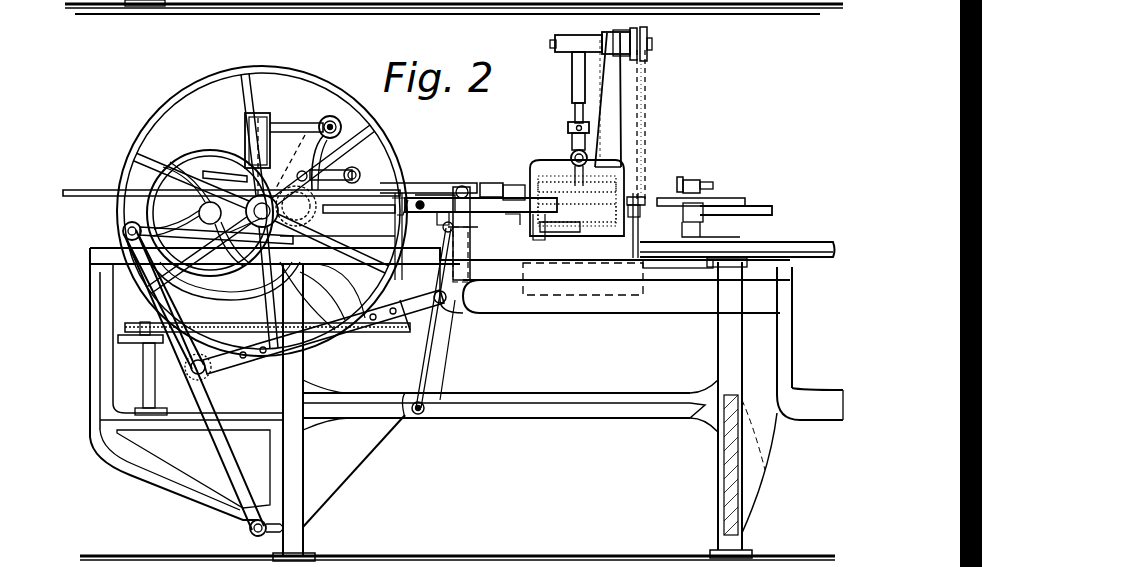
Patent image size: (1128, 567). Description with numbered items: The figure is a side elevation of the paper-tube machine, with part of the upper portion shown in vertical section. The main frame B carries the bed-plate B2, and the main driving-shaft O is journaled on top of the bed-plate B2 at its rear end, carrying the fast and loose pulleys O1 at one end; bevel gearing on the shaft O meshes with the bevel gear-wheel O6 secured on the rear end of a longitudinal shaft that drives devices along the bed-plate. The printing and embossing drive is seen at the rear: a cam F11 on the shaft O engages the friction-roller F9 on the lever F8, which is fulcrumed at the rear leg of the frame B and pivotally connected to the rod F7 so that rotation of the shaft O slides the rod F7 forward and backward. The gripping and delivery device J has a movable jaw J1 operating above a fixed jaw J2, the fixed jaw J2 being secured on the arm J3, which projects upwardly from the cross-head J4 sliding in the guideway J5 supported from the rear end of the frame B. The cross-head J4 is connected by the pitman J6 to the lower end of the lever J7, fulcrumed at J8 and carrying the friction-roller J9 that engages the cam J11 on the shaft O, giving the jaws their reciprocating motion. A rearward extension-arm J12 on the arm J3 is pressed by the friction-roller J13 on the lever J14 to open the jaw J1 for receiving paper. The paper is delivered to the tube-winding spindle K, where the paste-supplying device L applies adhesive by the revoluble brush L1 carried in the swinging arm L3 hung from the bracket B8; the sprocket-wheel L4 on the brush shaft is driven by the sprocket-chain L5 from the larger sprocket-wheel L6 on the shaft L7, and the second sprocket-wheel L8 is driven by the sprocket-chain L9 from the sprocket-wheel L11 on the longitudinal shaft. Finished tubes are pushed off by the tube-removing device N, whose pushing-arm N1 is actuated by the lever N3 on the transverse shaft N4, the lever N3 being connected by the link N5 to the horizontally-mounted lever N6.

The main frame B is at (466, 404).
The bed-plate B2 is at (822, 252).
The bracket B8 is at (610, 100).
The gripping and delivery device J is at (530, 180).
The movable jaw J1 is at (512, 178).
The fixed jaw J2 is at (540, 218).
The arm J3 is at (352, 172).
The cross-head J4 is at (470, 285).
The guideway J5 is at (575, 313).
The pitman J6 is at (324, 332).
The lever J7 is at (250, 280).
The fulcrum J8 is at (338, 122).
The friction-roller J9 is at (370, 212).
The cam J11 is at (365, 290).
The rearward extension-arm J12 is at (428, 190).
The friction-roller J13 is at (433, 213).
The lever J14 is at (327, 198).
The tube-winding spindle K is at (628, 180).
The paste-supplying device L is at (567, 133).
The revoluble brush L1 is at (572, 160).
The arm L3 is at (614, 100).
The sprocket-wheel L4 is at (693, 204).
The sprocket-chain L5 is at (578, 85).
The sprocket-wheel L6 is at (628, 30).
The shaft L7 is at (648, 44).
The sprocket-wheel L8 is at (646, 33).
The sprocket-chain L9 is at (646, 122).
The sprocket-wheel L11 is at (640, 218).
The tube-removing device N is at (447, 350).
The pushing-arm N1 is at (165, 324).
The lever N3 is at (425, 370).
The shaft N4 is at (418, 415).
The link N5 is at (388, 328).
The lever N6 is at (120, 338).
The main driving-shaft O is at (283, 170).
The fast and loose pulleys O1 is at (390, 152).
The bevel gear-wheel O6 is at (768, 204).
The rod F7 is at (317, 296).
The lever F8 is at (200, 395).
The friction-roller F9 is at (125, 229).
The cam F11 is at (188, 150).